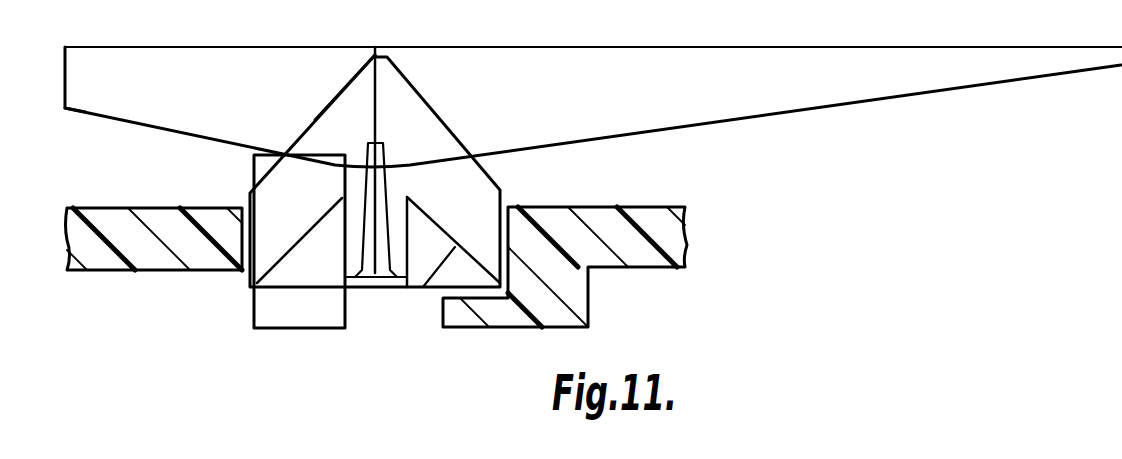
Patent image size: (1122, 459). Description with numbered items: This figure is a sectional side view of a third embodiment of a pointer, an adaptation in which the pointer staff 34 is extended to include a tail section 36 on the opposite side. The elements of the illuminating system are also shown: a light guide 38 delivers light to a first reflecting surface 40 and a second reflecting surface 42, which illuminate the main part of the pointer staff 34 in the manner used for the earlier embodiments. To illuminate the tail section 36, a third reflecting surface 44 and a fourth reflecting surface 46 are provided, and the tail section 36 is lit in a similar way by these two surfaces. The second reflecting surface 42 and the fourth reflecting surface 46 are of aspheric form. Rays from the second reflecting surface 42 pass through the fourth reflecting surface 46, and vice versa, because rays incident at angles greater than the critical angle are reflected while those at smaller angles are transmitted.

The pointer staff 34 is at (890, 90).
The tail section 36 is at (85, 108).
The light guide 38 is at (118, 215).
The first reflecting surface 40 is at (293, 250).
The second reflecting surface 42 is at (315, 120).
The third reflecting surface 44 is at (423, 287).
The fourth reflecting surface 46 is at (490, 173).